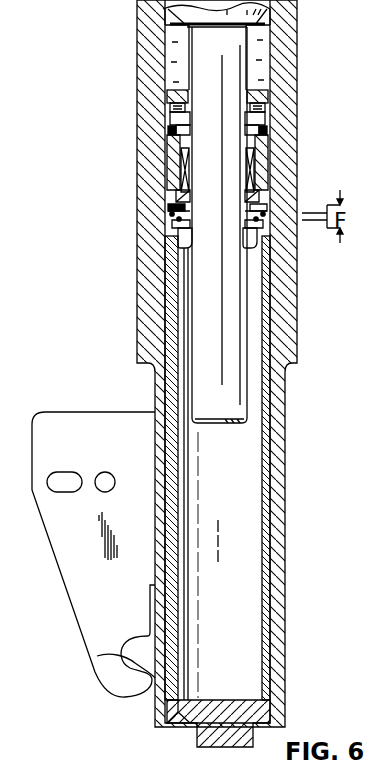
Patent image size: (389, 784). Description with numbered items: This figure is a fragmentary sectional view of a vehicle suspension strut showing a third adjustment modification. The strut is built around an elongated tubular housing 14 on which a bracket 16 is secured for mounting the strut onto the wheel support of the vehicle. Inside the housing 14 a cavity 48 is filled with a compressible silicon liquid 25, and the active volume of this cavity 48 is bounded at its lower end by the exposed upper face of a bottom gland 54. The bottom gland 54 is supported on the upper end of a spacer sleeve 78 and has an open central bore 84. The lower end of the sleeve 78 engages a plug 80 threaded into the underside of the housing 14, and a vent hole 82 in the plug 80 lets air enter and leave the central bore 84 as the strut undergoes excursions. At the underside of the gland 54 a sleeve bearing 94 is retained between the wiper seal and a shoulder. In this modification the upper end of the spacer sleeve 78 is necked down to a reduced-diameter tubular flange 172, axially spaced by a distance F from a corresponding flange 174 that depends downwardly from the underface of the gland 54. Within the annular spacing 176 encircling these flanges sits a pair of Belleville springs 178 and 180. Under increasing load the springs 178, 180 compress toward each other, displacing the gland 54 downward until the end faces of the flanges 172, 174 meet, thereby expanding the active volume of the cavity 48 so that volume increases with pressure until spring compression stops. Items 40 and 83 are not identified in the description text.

The tubular housing 14 is at (297, 303).
The bracket 16 is at (50, 532).
The compressible silicon liquid 25 is at (263, 30).
The piston 40 is at (227, 68).
The cavity 48 is at (263, 80).
The bottom gland 54 is at (263, 155).
The spacer sleeve 78 is at (272, 450).
The plug 80 is at (197, 735).
The vent hole 82 is at (187, 722).
The clip 83 is at (120, 657).
The central bore 84 is at (239, 484).
The sleeve bearing 94 is at (253, 182).
The tubular flange 172 is at (187, 246).
The flange 174 is at (247, 210).
The annular spacing 176 is at (167, 208).
The Belleville spring 178 is at (170, 222).
The Belleville spring 180 is at (167, 215).